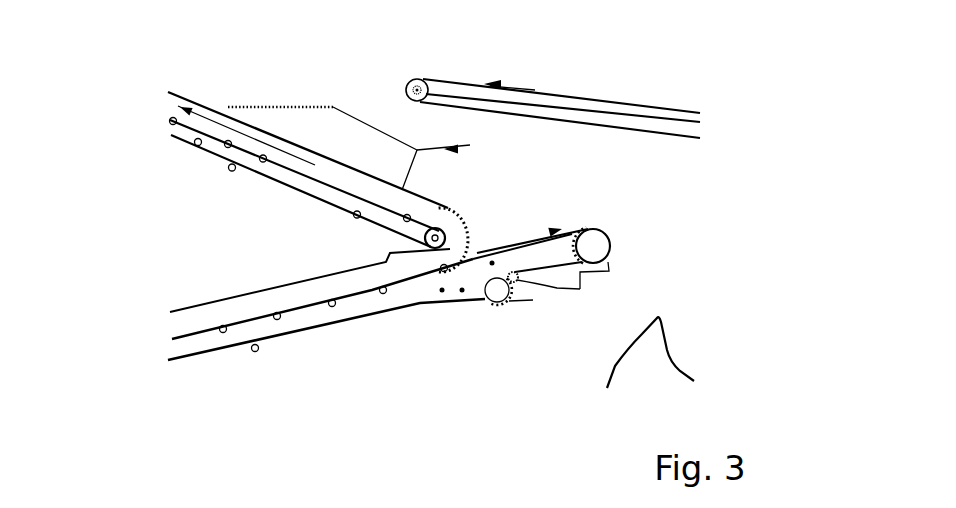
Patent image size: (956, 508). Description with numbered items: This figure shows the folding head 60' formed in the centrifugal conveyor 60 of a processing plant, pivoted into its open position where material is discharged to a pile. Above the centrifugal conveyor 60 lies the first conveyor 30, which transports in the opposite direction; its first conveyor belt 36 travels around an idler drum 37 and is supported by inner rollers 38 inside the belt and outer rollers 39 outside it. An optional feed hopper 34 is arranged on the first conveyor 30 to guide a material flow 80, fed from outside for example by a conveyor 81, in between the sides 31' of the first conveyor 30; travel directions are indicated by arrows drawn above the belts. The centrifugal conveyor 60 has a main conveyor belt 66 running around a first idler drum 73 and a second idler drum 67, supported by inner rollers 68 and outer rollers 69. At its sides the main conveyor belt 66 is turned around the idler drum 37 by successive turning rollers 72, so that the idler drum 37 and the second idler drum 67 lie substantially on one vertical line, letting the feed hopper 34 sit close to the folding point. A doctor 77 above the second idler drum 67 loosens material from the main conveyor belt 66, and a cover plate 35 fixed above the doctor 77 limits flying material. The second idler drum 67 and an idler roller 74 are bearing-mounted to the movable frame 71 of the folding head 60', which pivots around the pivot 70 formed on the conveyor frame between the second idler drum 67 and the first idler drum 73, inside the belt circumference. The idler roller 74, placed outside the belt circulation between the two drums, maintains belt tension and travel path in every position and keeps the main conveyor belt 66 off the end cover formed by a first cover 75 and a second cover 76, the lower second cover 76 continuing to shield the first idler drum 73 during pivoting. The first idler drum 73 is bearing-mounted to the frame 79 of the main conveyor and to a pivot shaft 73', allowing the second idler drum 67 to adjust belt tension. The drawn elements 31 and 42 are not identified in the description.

The first conveyor 30 is at (217, 62).
The sides of the first conveyor 31' is at (306, 112).
The conveyor belt 31 is at (246, 104).
The feed hopper 34 is at (331, 118).
The cover plate 35 is at (470, 145).
The first conveyor belt 36 is at (186, 140).
The idler drum 37 is at (433, 238).
The inner rollers 38 is at (170, 121).
The outer rollers 39 is at (231, 172).
The product 42 is at (666, 352).
The centrifugal conveyor 60 is at (326, 332).
The folding head 60' is at (711, 205).
The main conveyor belt 66 is at (290, 306).
The second idler drum 67 is at (592, 243).
The inner rollers 68 is at (219, 332).
The outer rollers 69 is at (252, 351).
The pivot 70 is at (493, 262).
The movable frame of the folding head 71 is at (531, 256).
The turning rollers 72 is at (456, 212).
The first idler drum 73 is at (497, 326).
The pivot shaft 73' is at (479, 323).
The idler roller 74 is at (533, 283).
The first cover 75 is at (552, 291).
The second cover 76 is at (533, 300).
The doctor 77 is at (578, 226).
The frame of the main conveyor 79 is at (442, 295).
The material flow 80 is at (463, 74).
The conveyor 81 is at (625, 90).